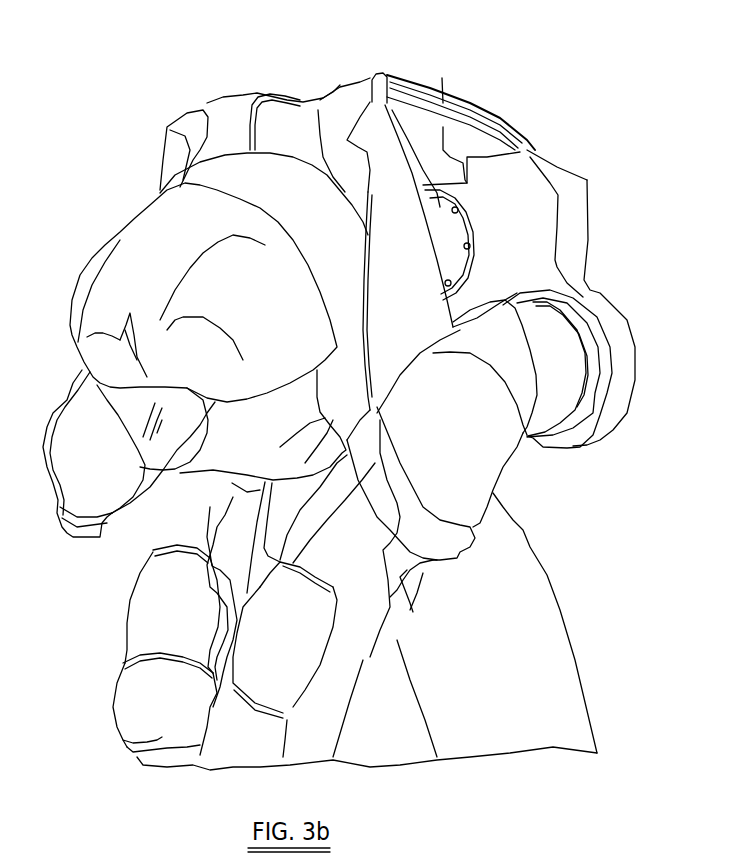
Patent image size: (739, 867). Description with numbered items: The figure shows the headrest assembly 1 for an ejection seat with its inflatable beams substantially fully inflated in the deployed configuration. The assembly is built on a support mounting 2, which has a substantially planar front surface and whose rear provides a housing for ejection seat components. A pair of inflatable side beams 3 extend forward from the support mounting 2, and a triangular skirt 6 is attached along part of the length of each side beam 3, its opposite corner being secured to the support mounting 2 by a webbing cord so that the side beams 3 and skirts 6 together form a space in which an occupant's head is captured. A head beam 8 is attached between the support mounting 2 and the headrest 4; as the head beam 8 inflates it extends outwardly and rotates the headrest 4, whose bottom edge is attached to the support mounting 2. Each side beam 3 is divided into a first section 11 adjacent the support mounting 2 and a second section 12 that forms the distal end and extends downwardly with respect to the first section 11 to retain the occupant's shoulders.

The headrest assembly 1 is at (320, 400).
The support mounting 2 is at (587, 291).
The inflatable side beams 3 is at (488, 413).
The headrest 4 is at (319, 62).
The triangular skirt 6 is at (533, 270).
The head beam 8 is at (453, 183).
The first section 11 is at (593, 376).
The second section 12 is at (480, 491).